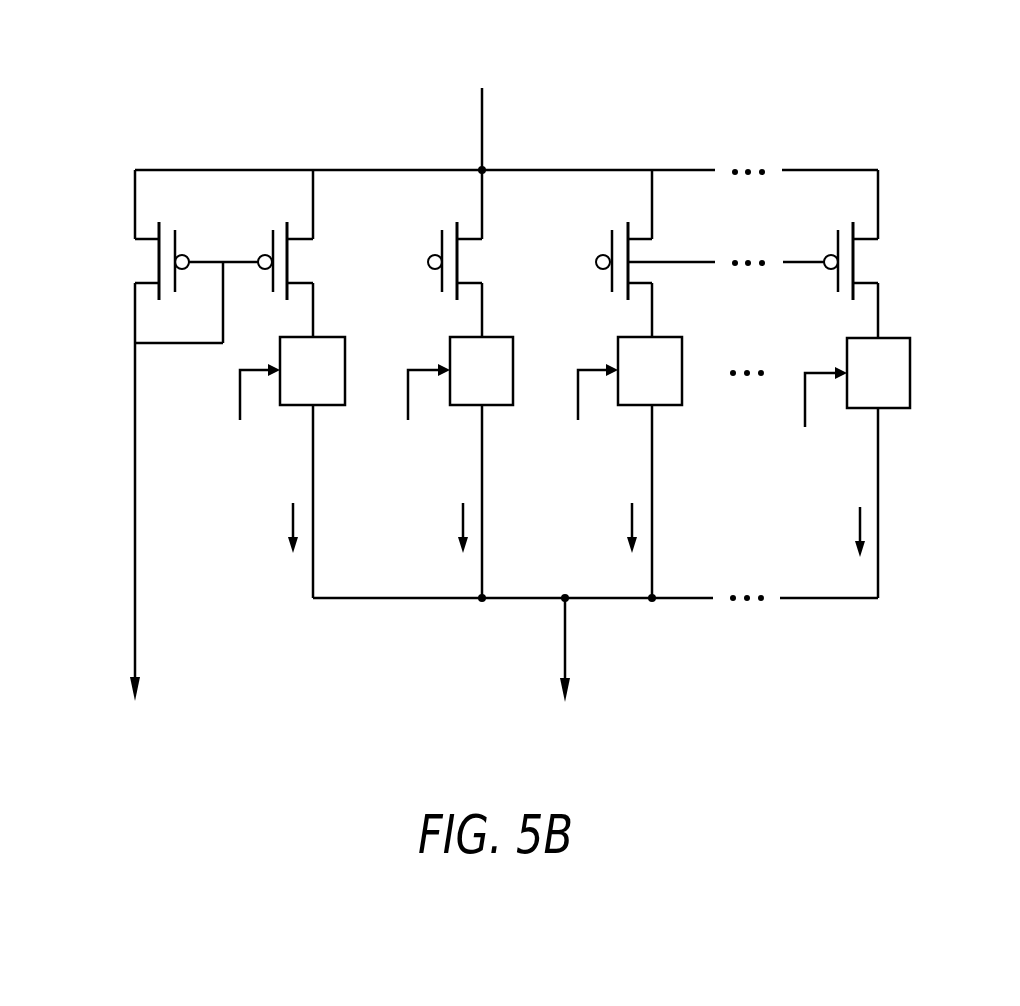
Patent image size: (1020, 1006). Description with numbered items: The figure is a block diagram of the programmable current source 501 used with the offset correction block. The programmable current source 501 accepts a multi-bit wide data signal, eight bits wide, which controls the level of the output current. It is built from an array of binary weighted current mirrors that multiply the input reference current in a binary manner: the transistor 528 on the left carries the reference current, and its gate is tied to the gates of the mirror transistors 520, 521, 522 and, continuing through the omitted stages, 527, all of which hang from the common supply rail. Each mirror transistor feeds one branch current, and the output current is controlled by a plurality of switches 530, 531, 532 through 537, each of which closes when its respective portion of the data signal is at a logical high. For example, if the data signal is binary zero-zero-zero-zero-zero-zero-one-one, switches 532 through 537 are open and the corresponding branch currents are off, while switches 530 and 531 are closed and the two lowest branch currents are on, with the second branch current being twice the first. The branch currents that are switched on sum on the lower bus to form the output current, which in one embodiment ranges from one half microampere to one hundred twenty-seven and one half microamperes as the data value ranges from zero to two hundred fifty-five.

The programmable current source 501 is at (308, 68).
The reference transistor 528 is at (150, 257).
The current source transistor 520 is at (280, 232).
The current source transistor 521 is at (450, 232).
The current source transistor 522 is at (618, 232).
The current source transistor 527 is at (847, 232).
The switch 530 is at (335, 383).
The switch 531 is at (504, 383).
The switch 532 is at (673, 383).
The switch 537 is at (901, 385).